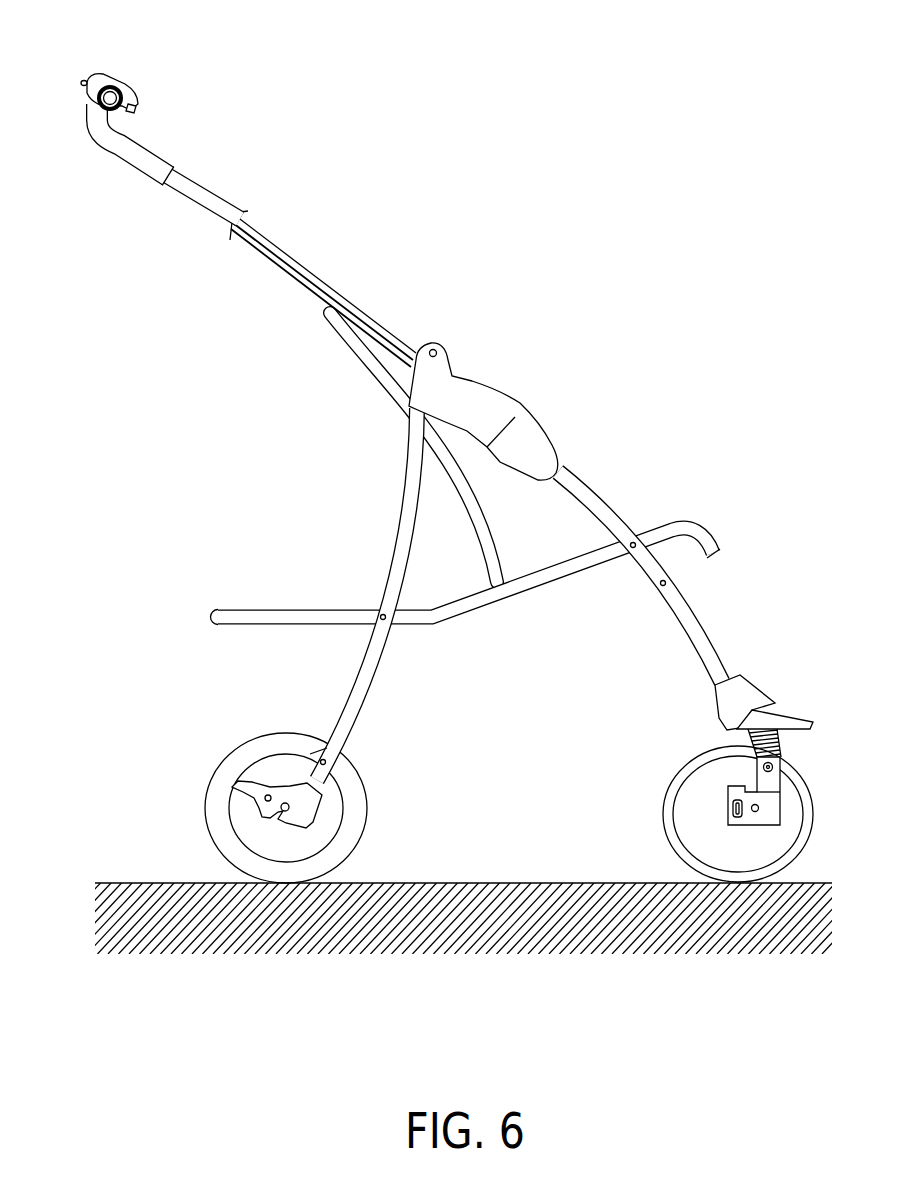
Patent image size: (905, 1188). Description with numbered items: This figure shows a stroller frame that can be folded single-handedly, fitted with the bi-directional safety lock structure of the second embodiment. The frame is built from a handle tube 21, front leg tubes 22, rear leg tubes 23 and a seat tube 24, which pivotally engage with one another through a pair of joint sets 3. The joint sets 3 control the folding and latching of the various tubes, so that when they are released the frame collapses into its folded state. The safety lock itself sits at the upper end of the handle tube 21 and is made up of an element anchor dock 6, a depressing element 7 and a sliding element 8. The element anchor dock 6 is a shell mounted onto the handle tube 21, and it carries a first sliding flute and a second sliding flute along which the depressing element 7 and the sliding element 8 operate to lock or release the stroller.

The joint sets 3 is at (525, 402).
The element anchor dock 6 is at (107, 77).
The depressing element 7 is at (136, 106).
The sliding element 8 is at (82, 84).
The handle tube 21 is at (204, 204).
The front leg tubes 22 is at (696, 612).
The rear leg tubes 23 is at (393, 550).
The seat tube 24 is at (690, 523).